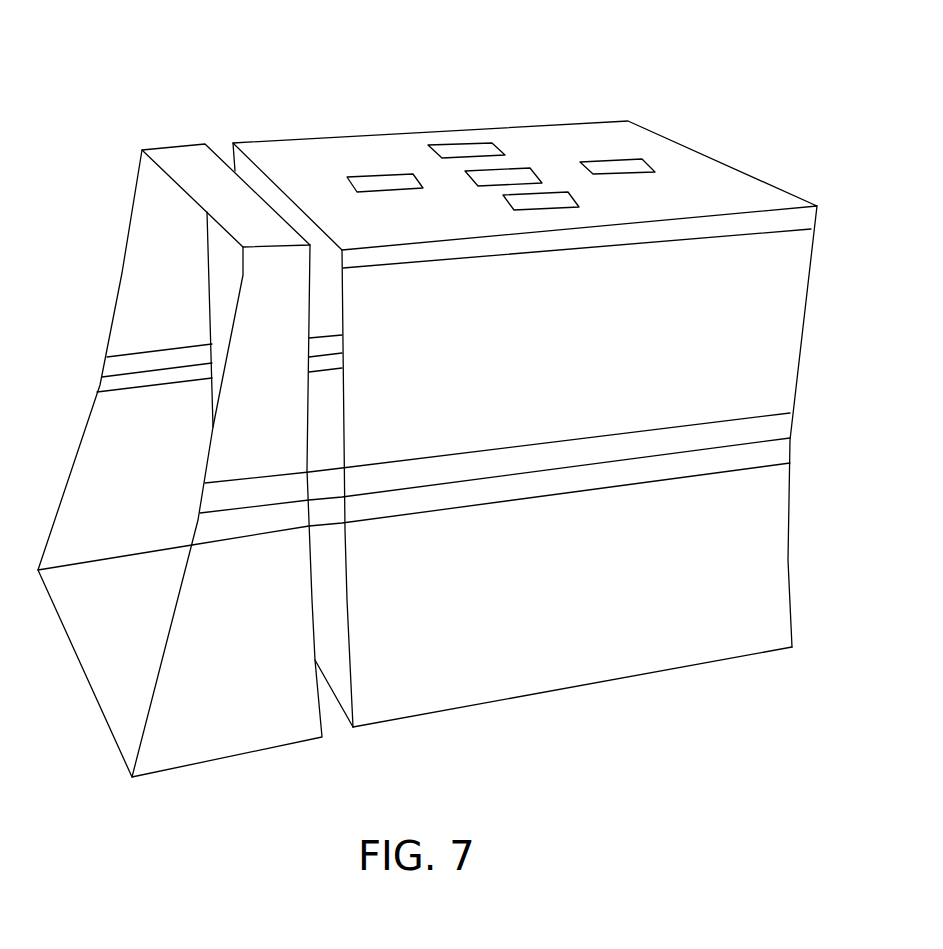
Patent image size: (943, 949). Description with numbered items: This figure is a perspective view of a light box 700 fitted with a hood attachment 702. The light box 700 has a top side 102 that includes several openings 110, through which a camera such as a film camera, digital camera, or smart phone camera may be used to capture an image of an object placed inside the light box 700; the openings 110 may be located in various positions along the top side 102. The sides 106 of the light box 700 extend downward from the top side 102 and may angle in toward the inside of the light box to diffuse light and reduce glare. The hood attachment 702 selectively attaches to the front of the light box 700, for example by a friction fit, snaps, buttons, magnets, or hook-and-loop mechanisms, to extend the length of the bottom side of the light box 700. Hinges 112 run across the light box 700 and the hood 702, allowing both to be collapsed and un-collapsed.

The light box 700 is at (133, 60).
The top side 102 is at (687, 160).
The openings 110 is at (618, 172).
The sides 106 is at (775, 367).
The hinges 112 is at (778, 454).
The hood attachment 702 is at (124, 270).